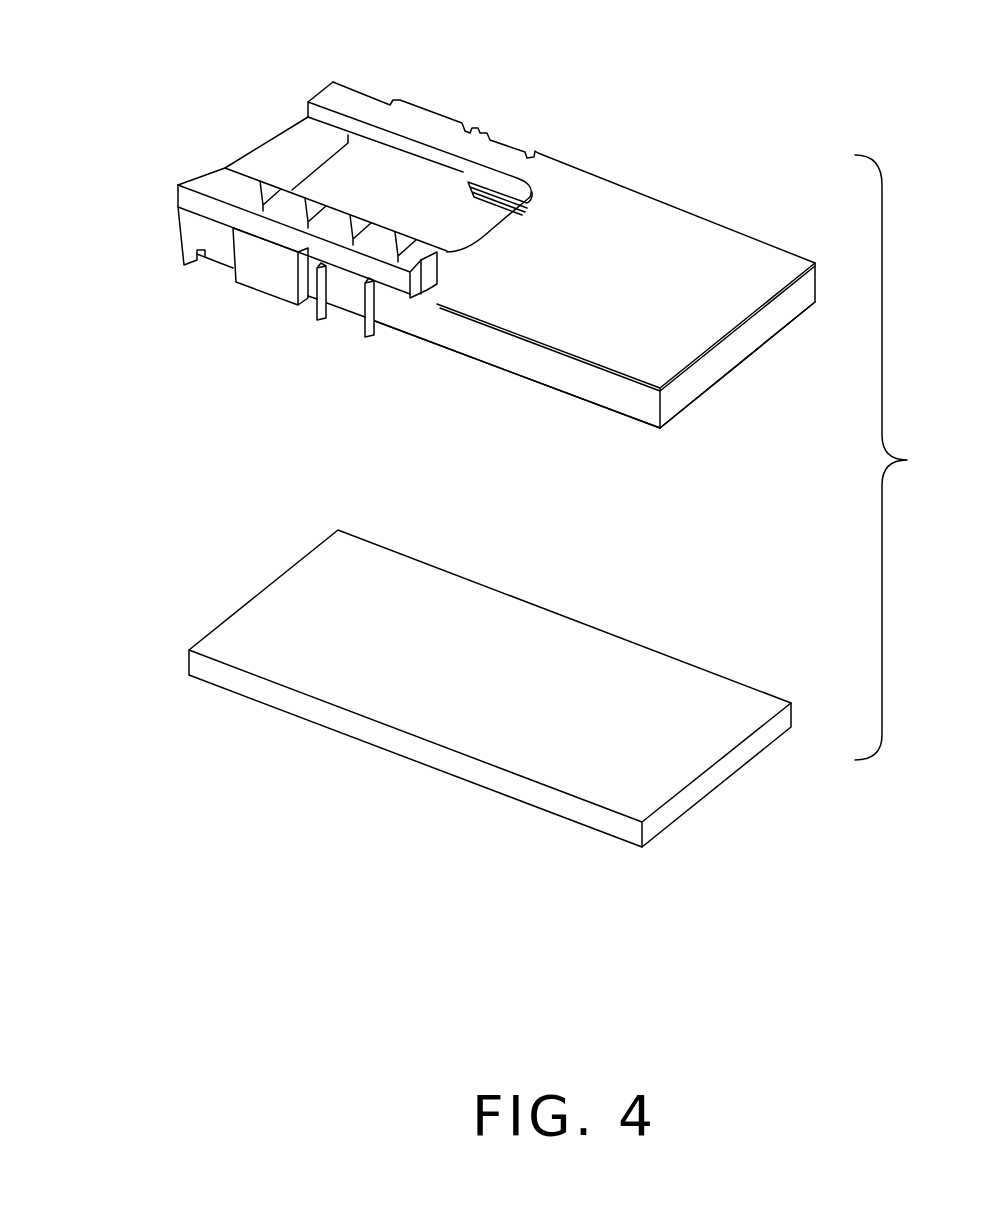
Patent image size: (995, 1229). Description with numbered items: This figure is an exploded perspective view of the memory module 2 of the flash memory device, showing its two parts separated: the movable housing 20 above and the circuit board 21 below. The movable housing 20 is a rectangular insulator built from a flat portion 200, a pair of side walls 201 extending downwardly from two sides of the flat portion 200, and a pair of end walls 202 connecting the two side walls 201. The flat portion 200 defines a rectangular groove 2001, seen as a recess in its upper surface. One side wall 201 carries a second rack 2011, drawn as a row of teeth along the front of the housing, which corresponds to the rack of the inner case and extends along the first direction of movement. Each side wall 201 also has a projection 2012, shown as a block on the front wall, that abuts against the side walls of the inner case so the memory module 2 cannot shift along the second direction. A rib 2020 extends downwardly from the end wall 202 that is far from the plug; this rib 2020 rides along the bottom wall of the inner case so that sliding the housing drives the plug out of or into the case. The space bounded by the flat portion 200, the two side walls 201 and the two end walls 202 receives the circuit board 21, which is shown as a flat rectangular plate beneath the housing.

The memory module 2 is at (896, 457).
The movable housing 20 is at (600, 128).
The flat portion 200 is at (700, 292).
The side walls 201 is at (548, 370).
The end walls 202 is at (298, 160).
The rectangular groove 2001 is at (375, 157).
The second rack 2011 is at (383, 245).
The projection 2012 is at (268, 267).
The rib 2020 is at (192, 262).
The circuit board 21 is at (580, 600).